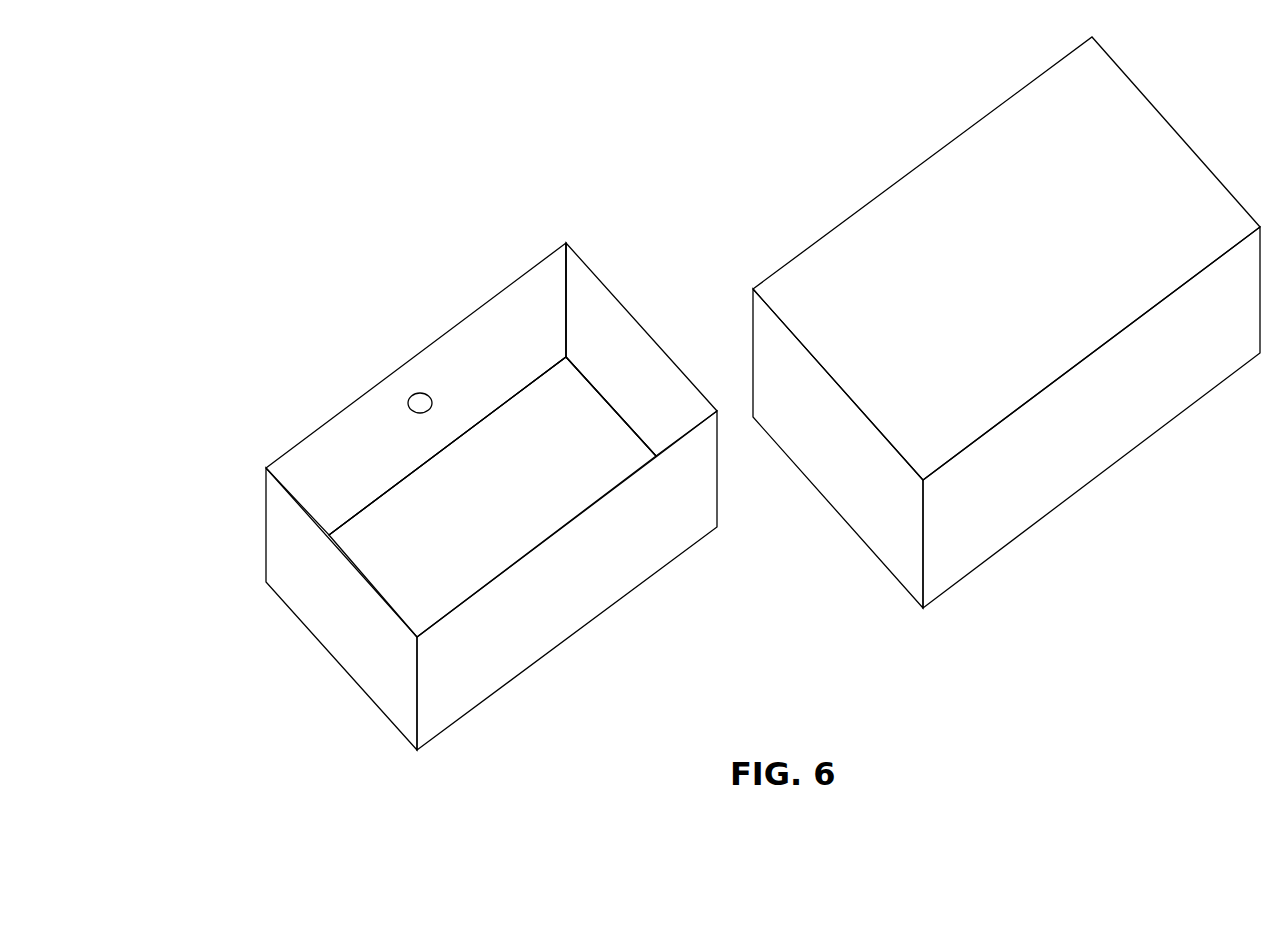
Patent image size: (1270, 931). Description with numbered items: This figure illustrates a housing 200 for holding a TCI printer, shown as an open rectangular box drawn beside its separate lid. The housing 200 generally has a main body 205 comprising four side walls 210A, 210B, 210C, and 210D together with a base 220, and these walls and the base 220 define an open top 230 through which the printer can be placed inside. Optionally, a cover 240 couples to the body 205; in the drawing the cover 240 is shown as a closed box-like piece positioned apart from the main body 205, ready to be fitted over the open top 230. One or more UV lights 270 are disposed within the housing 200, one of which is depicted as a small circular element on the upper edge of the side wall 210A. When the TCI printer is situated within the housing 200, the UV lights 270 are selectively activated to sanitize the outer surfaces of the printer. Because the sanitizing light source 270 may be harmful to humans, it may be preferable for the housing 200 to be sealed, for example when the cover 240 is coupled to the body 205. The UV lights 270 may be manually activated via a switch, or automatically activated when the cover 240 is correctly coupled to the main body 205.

The housing 200 is at (318, 350).
The main body 205 is at (410, 360).
The side wall 210A is at (416, 389).
The side wall 210B is at (641, 349).
The side wall 210C is at (567, 580).
The side wall 210D is at (341, 609).
The base 220 is at (515, 509).
The open top 230 is at (529, 312).
The cover 240 is at (805, 255).
The UV lights 270 is at (429, 396).